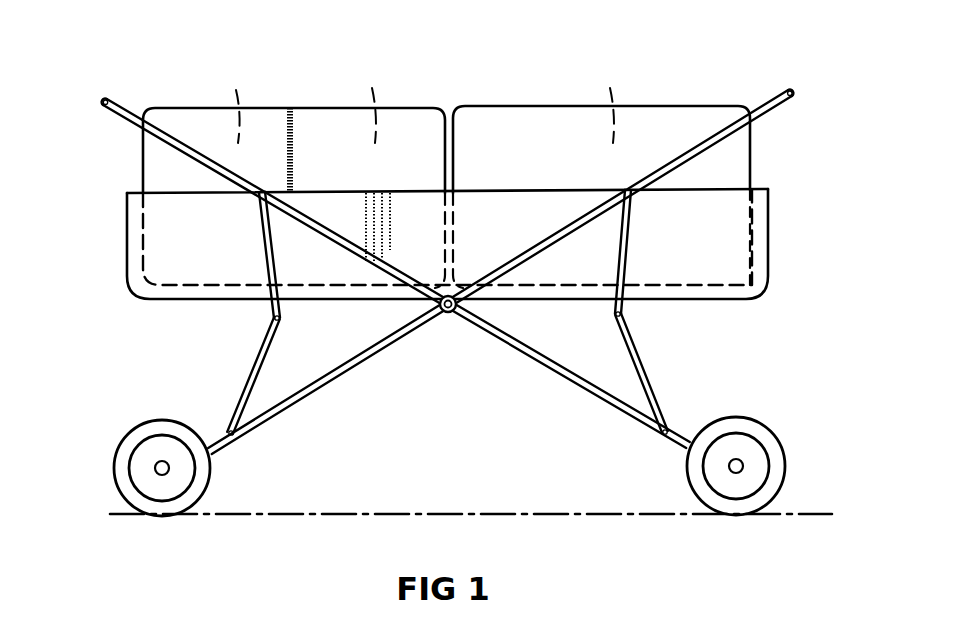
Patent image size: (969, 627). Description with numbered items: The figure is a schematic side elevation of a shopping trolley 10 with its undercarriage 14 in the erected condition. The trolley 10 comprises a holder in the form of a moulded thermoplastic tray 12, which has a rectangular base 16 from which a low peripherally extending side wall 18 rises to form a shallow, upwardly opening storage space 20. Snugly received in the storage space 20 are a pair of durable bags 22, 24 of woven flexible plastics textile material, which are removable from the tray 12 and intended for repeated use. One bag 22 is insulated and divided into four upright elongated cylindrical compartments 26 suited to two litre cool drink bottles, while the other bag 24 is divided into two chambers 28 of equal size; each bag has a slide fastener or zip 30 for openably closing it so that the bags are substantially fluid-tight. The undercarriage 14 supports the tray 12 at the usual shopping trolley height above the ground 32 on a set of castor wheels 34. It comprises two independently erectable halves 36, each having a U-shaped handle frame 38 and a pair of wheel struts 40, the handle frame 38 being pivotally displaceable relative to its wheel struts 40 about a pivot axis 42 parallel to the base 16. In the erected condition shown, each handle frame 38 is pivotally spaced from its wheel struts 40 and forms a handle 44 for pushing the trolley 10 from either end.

The shopping trolley 10 is at (686, 66).
The tray 12 is at (166, 236).
The undercarriage 14 is at (487, 388).
The rectangular base 16 is at (522, 284).
The side wall 18 is at (493, 220).
The storage space 20 is at (772, 224).
The bag 22 is at (198, 123).
The bag 24 is at (537, 138).
The compartments 26 is at (298, 99).
The chambers 28 is at (607, 99).
The slide fastener 30 is at (290, 106).
The ground 32 is at (595, 509).
The wheels 34 is at (165, 432).
The undercarriage half 36 is at (240, 326).
The handle frame 38 is at (168, 142).
The wheel struts 40 is at (299, 394).
The pivot axis 42 is at (448, 318).
The handle 44 is at (104, 98).